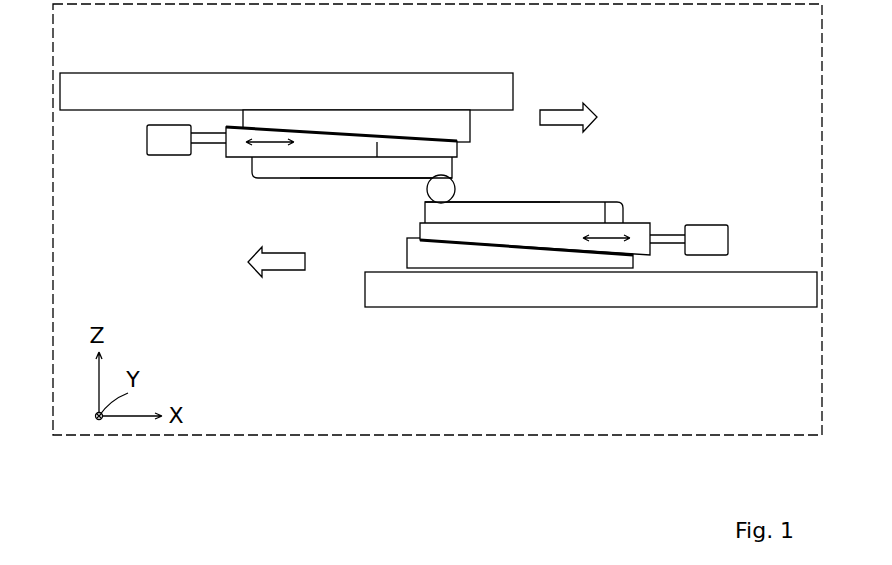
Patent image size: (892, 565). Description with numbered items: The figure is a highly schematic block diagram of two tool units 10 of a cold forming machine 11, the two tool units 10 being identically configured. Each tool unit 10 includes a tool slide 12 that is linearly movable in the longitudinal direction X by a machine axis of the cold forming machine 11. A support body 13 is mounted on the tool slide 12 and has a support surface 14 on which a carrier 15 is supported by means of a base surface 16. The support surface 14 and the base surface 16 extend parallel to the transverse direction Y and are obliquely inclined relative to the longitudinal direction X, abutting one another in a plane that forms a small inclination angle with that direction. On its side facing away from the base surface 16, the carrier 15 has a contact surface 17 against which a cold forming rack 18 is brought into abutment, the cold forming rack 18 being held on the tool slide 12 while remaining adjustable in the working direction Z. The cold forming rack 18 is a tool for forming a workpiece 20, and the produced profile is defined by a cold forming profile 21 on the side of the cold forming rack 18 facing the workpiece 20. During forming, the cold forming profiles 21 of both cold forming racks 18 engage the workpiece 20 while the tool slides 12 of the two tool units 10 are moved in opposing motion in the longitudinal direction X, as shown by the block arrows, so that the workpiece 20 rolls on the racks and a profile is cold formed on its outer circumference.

The tool unit 10 is at (565, 71).
The cold forming machine 11 is at (358, 437).
The tool slide 12 is at (200, 82).
The support body 13 is at (414, 125).
The support surface 14 is at (300, 152).
The carrier 15 is at (235, 148).
The base surface 16 is at (304, 118).
The contact surface 17 is at (318, 172).
The cold forming rack 18 is at (376, 170).
The workpiece 20 is at (438, 192).
The cold forming profile 21 is at (352, 190).